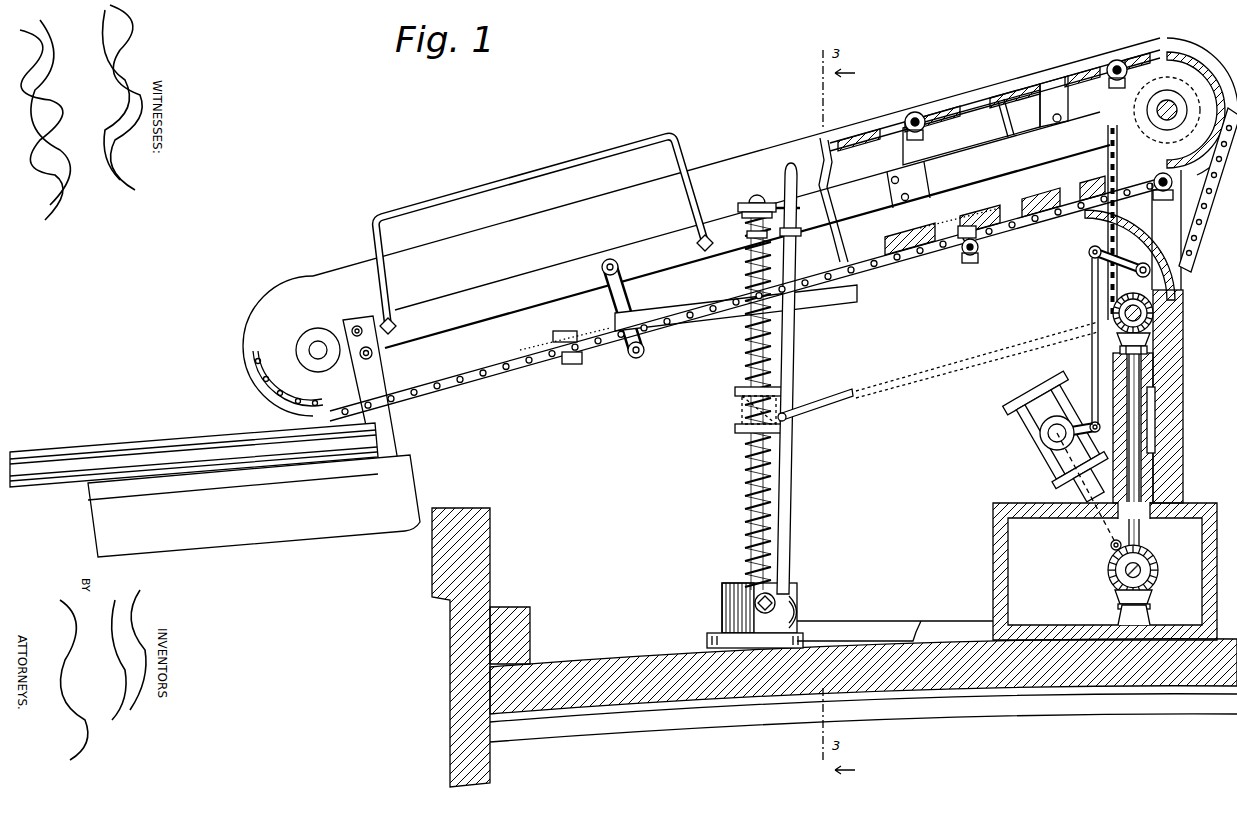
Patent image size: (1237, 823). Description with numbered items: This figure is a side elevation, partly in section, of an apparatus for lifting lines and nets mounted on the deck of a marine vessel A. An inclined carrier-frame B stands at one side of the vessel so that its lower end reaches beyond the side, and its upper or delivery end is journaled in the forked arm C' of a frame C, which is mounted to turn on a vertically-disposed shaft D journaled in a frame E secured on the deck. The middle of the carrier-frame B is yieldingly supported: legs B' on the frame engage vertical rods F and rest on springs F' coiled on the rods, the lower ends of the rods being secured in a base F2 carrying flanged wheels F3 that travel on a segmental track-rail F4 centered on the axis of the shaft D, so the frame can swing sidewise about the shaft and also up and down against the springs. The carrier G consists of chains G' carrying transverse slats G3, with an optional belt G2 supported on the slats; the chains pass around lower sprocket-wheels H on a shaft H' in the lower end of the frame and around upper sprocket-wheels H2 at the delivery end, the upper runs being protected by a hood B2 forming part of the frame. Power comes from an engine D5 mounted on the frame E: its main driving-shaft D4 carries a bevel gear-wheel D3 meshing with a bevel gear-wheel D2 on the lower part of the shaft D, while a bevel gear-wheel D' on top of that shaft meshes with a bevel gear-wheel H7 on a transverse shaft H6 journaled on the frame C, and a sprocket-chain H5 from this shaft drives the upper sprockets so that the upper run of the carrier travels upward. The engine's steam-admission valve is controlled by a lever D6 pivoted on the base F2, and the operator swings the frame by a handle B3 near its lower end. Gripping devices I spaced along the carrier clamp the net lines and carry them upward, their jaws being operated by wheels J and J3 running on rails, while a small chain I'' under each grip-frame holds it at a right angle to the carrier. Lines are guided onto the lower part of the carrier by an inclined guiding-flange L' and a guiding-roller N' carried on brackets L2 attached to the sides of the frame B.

The marine vessel A is at (834, 647).
The carrier-frame B is at (701, 227).
The legs B' is at (759, 199).
The hood B2 is at (753, 156).
The handle B3 is at (612, 152).
The frame C is at (1157, 396).
The forked arm C' is at (1161, 204).
The vertically-disposed shaft D is at (1121, 476).
The bevel gear-wheel D' is at (1159, 337).
The bevel gear-wheel D2 is at (1152, 598).
The bevel gear-wheel D3 is at (1158, 565).
The main driving-shaft D4 is at (1112, 572).
The engine D5 is at (1040, 465).
The lever D6 is at (792, 360).
The frame E is at (996, 572).
The rods F is at (744, 400).
The springs F' is at (743, 244).
The base F2 is at (800, 585).
The flanged wheels F3 is at (802, 610).
The segmental track-rail F4 is at (882, 628).
The carrier G is at (995, 100).
The chains G' is at (747, 299).
The belt G2 is at (1150, 55).
The slats G3 is at (1180, 70).
The sprocket-wheels H is at (288, 378).
The shaft H' is at (318, 335).
The sprocket-wheels H2 is at (1185, 106).
The sprocket-chain H5 is at (1093, 249).
The shaft H6 is at (1112, 313).
The bevel gear-wheel H7 is at (1092, 345).
The gripping devices I is at (854, 209).
The small chain I'' is at (763, 248).
The wheels J is at (568, 330).
The wheels J3 is at (1043, 138).
The guiding-flange L' is at (254, 506).
The brackets L2 is at (371, 396).
The guiding-roller N' is at (194, 451).